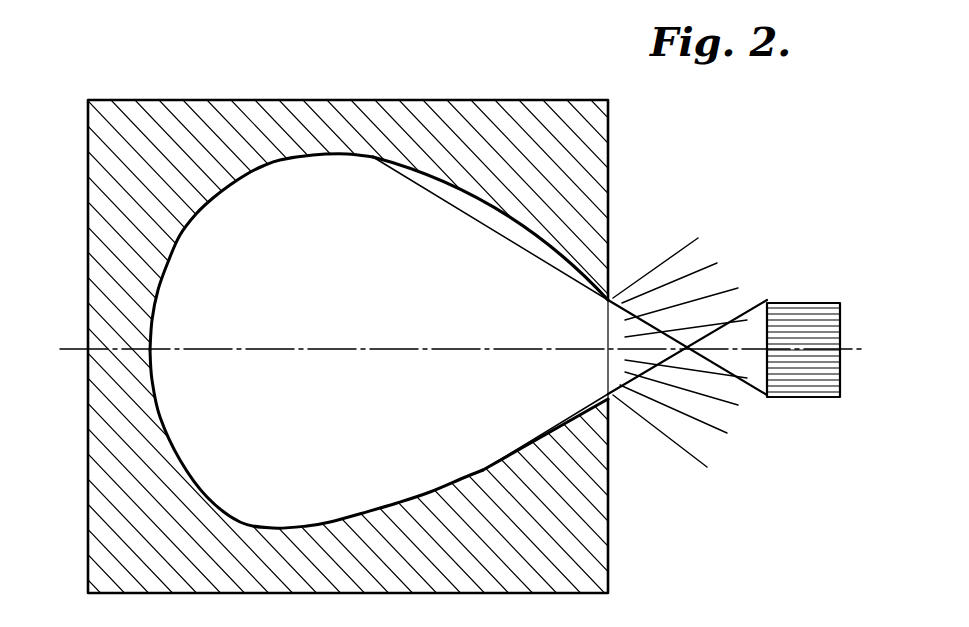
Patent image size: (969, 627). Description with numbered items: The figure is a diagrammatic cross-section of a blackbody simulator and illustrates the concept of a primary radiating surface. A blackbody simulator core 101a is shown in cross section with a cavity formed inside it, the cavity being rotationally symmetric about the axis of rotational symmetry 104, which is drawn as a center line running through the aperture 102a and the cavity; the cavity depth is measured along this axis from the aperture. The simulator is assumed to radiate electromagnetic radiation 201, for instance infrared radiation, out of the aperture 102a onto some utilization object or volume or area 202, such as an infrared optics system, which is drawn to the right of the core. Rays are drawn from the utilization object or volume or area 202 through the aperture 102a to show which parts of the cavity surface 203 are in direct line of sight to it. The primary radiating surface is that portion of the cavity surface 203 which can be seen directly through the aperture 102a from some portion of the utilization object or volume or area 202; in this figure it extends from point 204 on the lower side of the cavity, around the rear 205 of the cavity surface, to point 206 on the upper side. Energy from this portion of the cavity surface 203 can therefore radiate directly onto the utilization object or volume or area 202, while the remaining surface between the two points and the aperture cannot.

The blackbody simulator core 101a is at (152, 100).
The aperture 102a is at (612, 375).
The axis of rotational symmetry 104 is at (422, 348).
The electromagnetic radiation 201 is at (722, 232).
The utilization object or volume or area 202 is at (797, 398).
The cavity surface 203 is at (542, 438).
The point 204 is at (483, 470).
The rear of the cavity surface 205 is at (153, 345).
The point 206 is at (372, 158).